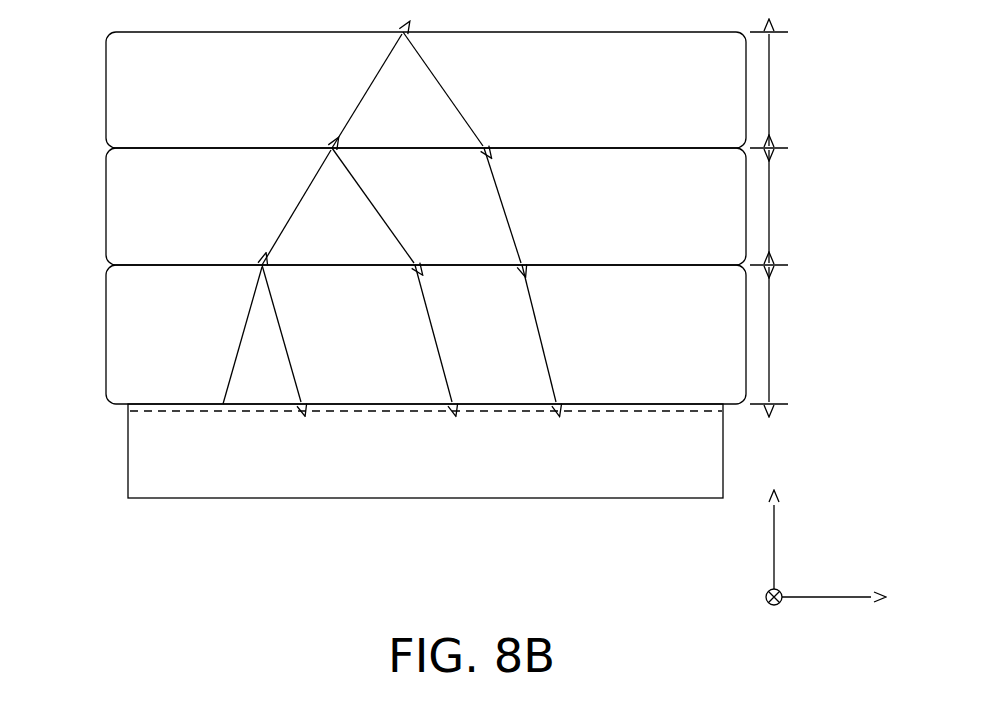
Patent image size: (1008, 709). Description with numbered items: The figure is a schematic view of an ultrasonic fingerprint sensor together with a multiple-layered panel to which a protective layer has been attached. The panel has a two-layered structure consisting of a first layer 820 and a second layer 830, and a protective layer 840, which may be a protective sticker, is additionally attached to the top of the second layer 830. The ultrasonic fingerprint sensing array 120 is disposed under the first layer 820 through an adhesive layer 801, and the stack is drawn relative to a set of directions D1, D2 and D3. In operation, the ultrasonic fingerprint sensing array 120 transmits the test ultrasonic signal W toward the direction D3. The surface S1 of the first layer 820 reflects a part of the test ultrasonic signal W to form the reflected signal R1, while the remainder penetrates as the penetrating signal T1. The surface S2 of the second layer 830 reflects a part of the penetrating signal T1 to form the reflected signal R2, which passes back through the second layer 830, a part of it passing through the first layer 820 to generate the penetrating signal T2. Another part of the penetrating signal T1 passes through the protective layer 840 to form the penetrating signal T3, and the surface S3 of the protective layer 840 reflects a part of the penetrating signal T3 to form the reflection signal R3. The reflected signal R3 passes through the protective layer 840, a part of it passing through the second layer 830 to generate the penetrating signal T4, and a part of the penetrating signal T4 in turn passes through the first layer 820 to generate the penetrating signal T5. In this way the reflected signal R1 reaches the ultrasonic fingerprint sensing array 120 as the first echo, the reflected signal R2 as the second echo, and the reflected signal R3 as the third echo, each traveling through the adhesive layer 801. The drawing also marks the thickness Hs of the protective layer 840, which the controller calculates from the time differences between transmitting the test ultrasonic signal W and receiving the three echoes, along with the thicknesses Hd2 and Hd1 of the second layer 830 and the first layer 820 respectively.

The protective layer 840 is at (113, 91).
The second layer 830 is at (113, 209).
The first layer 820 is at (114, 342).
The adhesive layer 801 is at (125, 404).
The ultrasonic fingerprint sensing array 120 is at (132, 485).
The surface of protective layer S3 is at (168, 35).
The surface of second layer S2 is at (168, 151).
The surface of first layer S1 is at (168, 268).
The test ultrasonic signal W is at (240, 347).
The reflected signal R1 is at (287, 344).
The reflected signal R2 is at (372, 205).
The reflection signal R3 is at (442, 88).
The penetrating signal T1 is at (297, 206).
The penetrating signal T2 is at (434, 337).
The penetrating signal T3 is at (367, 90).
The penetrating signal T4 is at (503, 205).
The penetrating signal T5 is at (541, 341).
The thickness of protective layer Hs is at (781, 90).
The thickness of second dielectric layer Hd2 is at (789, 207).
The thickness of first dielectric layer Hd1 is at (789, 335).
The first direction D1 is at (844, 597).
The second direction D2 is at (757, 602).
The direction D3 is at (774, 530).